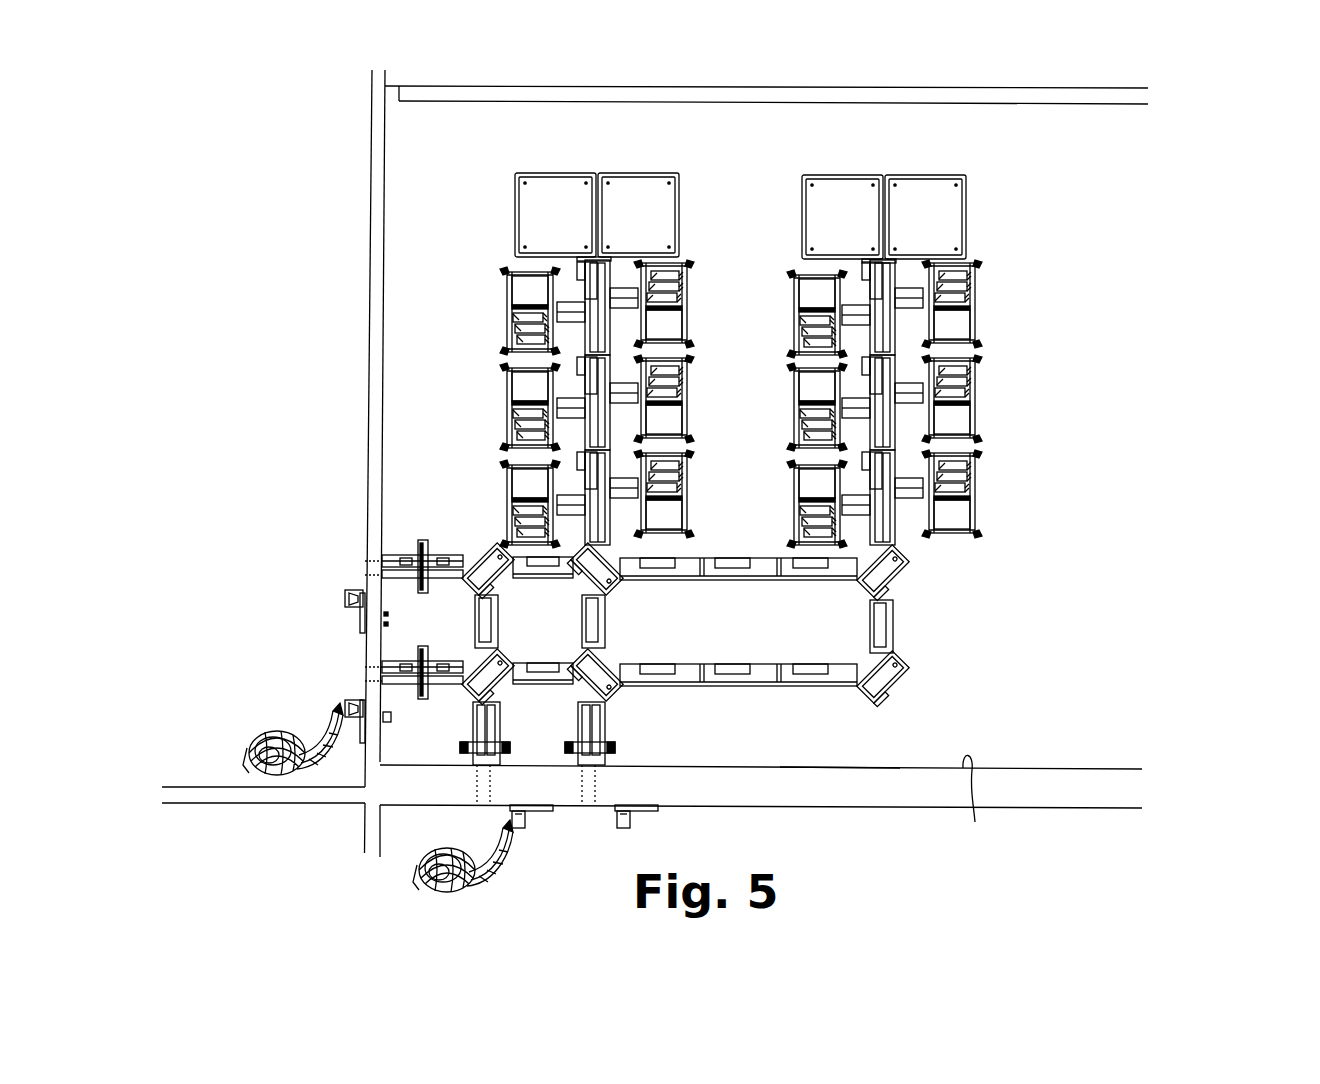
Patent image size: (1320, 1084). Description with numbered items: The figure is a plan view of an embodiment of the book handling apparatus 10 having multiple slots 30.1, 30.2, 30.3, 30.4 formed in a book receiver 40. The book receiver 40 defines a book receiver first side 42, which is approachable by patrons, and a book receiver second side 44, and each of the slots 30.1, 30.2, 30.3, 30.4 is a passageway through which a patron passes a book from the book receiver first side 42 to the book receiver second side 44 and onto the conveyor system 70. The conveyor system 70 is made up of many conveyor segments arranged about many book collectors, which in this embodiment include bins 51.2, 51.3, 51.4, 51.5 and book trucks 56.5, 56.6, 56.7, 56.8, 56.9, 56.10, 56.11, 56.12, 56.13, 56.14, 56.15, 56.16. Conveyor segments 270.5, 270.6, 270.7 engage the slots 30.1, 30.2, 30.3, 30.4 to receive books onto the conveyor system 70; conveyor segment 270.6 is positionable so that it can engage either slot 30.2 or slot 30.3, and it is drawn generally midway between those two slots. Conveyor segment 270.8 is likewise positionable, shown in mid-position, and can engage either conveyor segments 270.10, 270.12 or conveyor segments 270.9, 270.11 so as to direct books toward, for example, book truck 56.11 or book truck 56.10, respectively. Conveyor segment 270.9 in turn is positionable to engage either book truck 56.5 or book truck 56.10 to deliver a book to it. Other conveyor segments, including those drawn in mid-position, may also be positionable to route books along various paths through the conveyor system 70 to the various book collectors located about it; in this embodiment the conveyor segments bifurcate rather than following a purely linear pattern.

The book handling apparatus 10 is at (701, 481).
The conveyor system 70 is at (689, 337).
The bin 51.2 is at (560, 190).
The bin 51.3 is at (643, 190).
The bin 51.4 is at (845, 196).
The bin 51.5 is at (937, 195).
The book truck 56.5 is at (505, 494).
The book truck 56.6 is at (505, 384).
The book truck 56.7 is at (505, 292).
The book truck 56.8 is at (690, 302).
The book truck 56.9 is at (690, 398).
The book truck 56.10 is at (690, 492).
The book truck 56.11 is at (965, 505).
The book truck 56.12 is at (978, 410).
The book truck 56.13 is at (980, 312).
The book truck 56.14 is at (795, 290).
The book truck 56.15 is at (792, 382).
The book truck 56.16 is at (792, 478).
The conveyor segment 270.5 is at (478, 548).
The conveyor segment 270.6 is at (470, 700).
The conveyor segment 270.7 is at (595, 690).
The conveyor segment 270.8 is at (620, 586).
The conveyor segment 270.9 is at (592, 506).
The conveyor segment 270.10 is at (543, 566).
The conveyor segment 270.11 is at (600, 625).
The conveyor segment 270.12 is at (683, 570).
The slot 30.1 is at (380, 559).
The slot 30.2 is at (365, 675).
The slot 30.3 is at (485, 790).
The slot 30.4 is at (590, 788).
The book receiver 40 is at (910, 790).
The book receiver first side 42 is at (830, 809).
The book receiver second side 44 is at (979, 801).